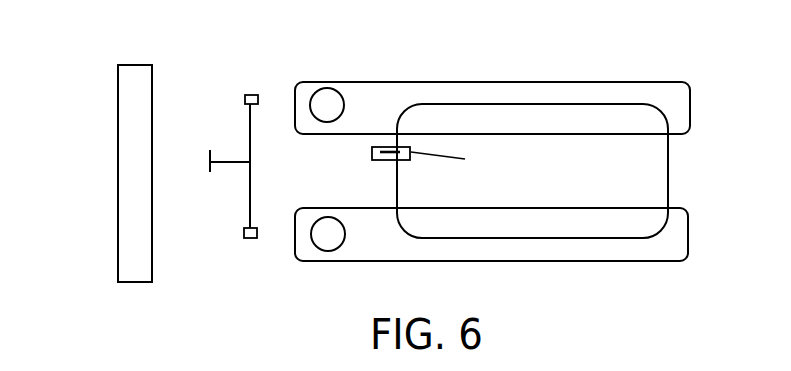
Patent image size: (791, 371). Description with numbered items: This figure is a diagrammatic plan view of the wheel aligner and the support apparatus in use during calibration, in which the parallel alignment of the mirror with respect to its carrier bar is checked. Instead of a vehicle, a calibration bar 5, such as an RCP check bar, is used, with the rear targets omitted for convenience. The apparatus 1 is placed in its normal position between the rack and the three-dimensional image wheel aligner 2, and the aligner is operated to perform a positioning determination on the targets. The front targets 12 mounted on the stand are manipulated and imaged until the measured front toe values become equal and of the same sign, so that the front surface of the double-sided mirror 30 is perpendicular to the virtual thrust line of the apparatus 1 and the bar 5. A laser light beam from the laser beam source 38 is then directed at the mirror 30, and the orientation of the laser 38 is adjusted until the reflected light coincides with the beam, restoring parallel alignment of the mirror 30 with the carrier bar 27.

The apparatus 1 is at (285, 77).
The 3D image wheel aligner 2 is at (90, 233).
The calibration bar 5 is at (668, 160).
The front targets 12 is at (247, 95).
The carrier bar 27 is at (249, 136).
The double-sided mirror 30 is at (210, 172).
The laser beam source 38 is at (402, 161).